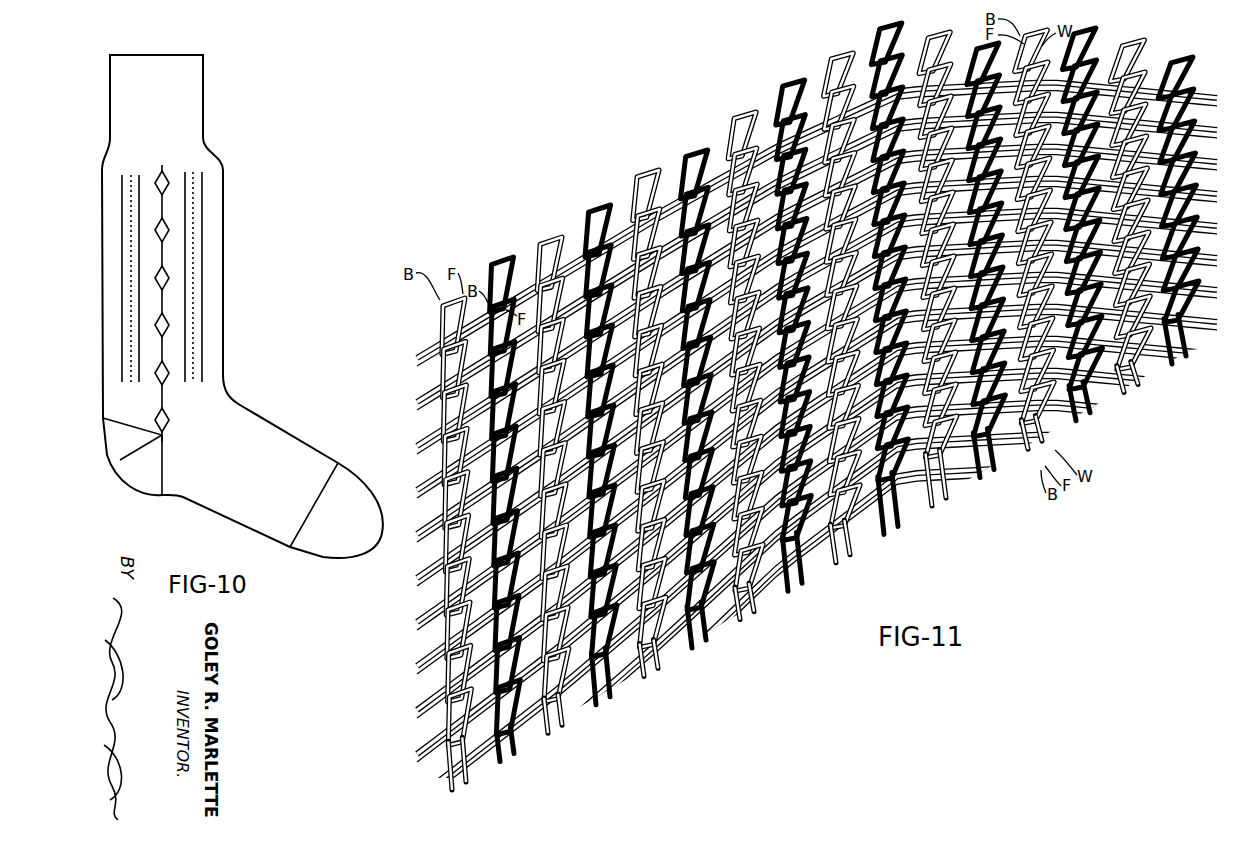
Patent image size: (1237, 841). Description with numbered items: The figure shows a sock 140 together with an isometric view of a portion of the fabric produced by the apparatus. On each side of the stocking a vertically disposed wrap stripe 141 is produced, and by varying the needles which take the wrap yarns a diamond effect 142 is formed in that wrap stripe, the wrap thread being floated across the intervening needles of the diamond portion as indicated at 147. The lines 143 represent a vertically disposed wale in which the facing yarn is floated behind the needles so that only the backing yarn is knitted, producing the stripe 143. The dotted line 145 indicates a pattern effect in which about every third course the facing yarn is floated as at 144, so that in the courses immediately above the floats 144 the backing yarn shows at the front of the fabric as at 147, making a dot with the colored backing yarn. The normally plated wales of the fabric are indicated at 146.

In FIG. 10, the sock 140 is at (222, 223).
In FIG. 10, the wrap stripe 141 is at (168, 390).
In FIG. 11, the wrap stripe 141 is at (1050, 422).
In FIG. 10, the diamond effect 142 is at (162, 176).
In FIG. 11, the diamond effect 142 is at (1184, 80).
In FIG. 10, the stripe wale 143 is at (139, 243).
In FIG. 11, the stripe wale 143 is at (497, 264).
In FIG. 11, the facing yarn float 144 is at (817, 462).
In FIG. 10, the dotted line pattern 145 is at (131, 224).
In FIG. 11, the dotted line pattern 145 is at (590, 206).
In FIG. 11, the normally plated wales 146 is at (467, 779).
In FIG. 11, the backing yarn show 147 is at (817, 466).